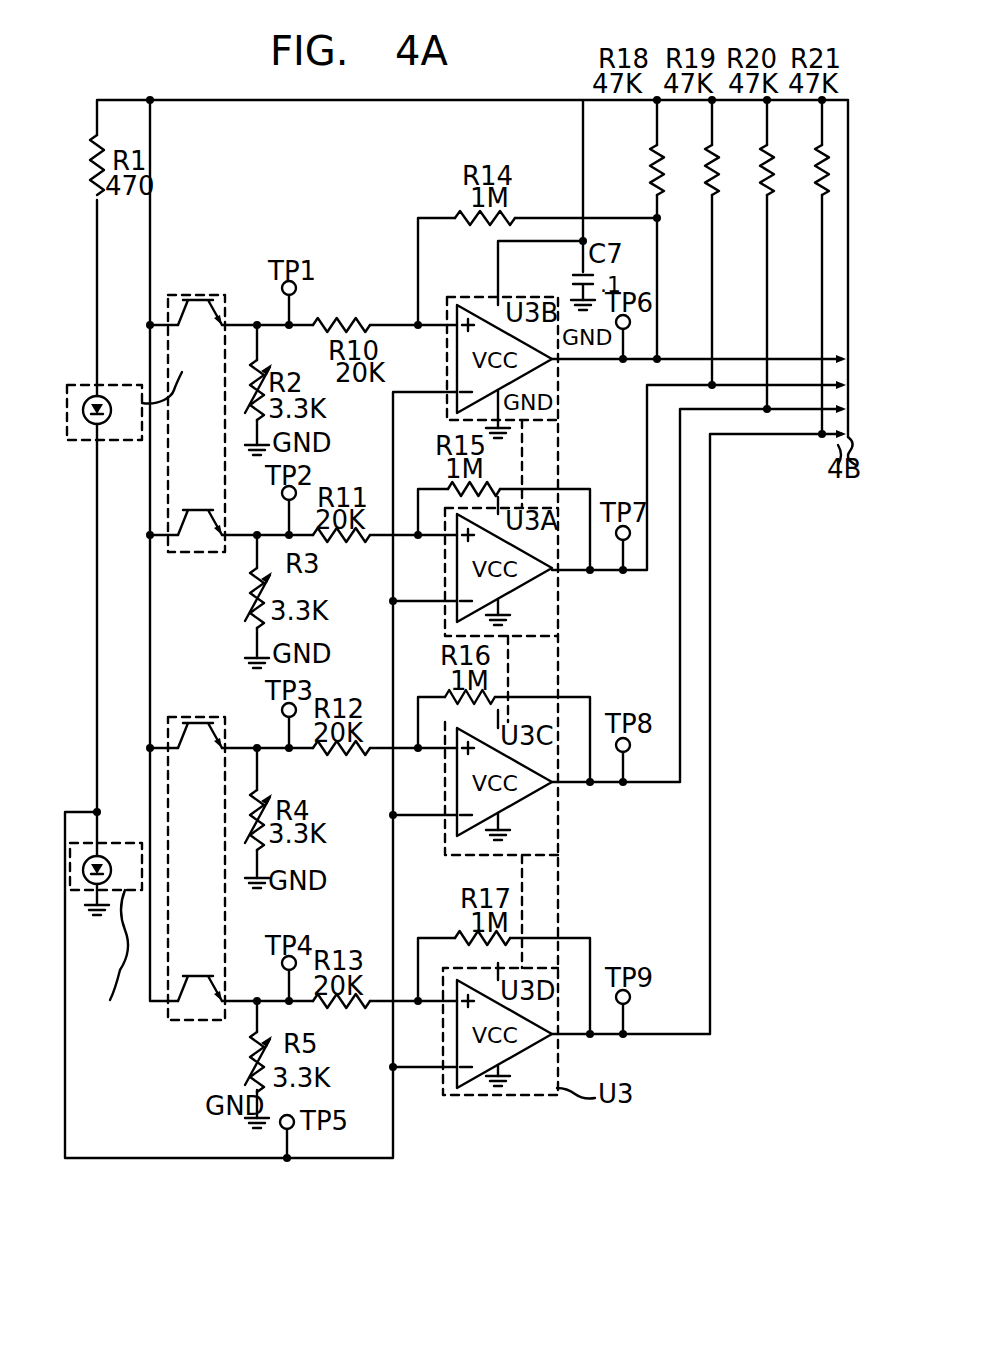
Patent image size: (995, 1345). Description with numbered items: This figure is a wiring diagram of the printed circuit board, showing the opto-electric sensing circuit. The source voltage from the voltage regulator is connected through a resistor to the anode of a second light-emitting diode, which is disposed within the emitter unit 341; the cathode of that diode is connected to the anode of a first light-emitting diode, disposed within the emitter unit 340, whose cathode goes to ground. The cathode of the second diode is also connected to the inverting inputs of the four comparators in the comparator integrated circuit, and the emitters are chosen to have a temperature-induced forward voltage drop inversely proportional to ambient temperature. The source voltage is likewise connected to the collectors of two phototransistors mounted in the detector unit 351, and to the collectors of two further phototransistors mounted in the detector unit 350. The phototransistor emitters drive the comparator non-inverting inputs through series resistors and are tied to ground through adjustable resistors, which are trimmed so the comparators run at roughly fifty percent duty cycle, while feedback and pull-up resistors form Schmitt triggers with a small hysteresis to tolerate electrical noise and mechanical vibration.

The detector unit 351 is at (168, 312).
The emitter unit 341 is at (85, 442).
The detector unit 350 is at (168, 785).
The emitter unit 340 is at (142, 844).